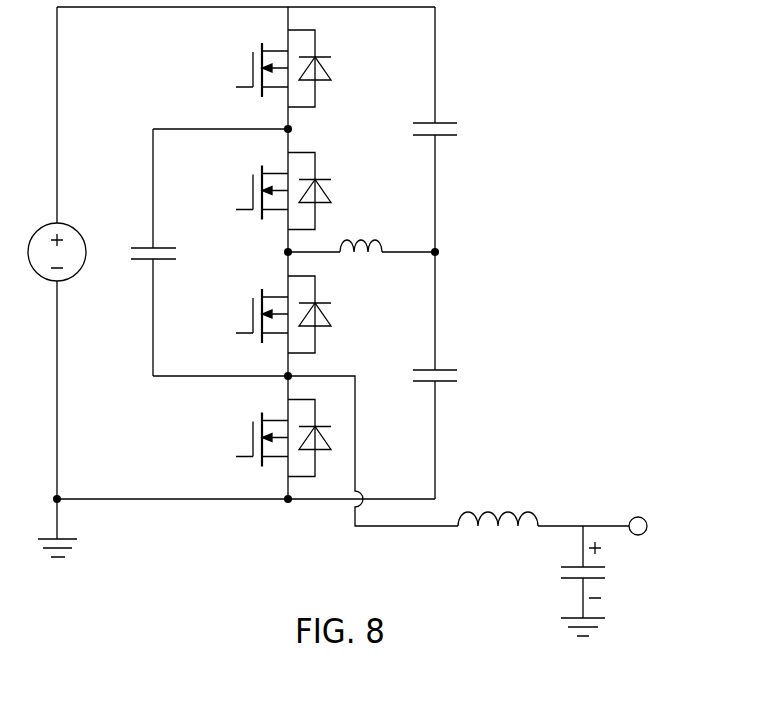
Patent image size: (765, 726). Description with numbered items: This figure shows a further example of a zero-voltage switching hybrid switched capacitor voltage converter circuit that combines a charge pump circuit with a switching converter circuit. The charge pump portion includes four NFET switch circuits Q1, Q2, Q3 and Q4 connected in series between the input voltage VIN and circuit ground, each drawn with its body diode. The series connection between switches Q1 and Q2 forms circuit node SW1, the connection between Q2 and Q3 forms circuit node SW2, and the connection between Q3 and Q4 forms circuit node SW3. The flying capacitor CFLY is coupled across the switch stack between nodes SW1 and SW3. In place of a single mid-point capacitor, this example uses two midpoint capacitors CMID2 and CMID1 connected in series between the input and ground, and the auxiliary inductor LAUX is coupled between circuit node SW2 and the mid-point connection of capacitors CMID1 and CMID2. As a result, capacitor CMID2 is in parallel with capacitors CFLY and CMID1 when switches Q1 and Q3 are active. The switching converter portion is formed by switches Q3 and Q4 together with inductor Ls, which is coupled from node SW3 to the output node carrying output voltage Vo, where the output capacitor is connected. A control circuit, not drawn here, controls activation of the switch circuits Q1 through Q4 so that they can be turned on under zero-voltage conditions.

The input voltage VIN is at (55, 232).
The flying capacitor CFLY is at (141, 231).
The first switch circuit Q1 is at (277, 68).
The second switch circuit Q2 is at (277, 191).
The third switch circuit Q3 is at (277, 314).
The fourth switch circuit Q4 is at (277, 438).
The circuit node SW1 is at (314, 134).
The circuit node SW2 is at (261, 256).
The circuit node SW3 is at (354, 364).
The auxiliary inductor LAUX is at (362, 227).
The midpoint capacitor CMID2 is at (454, 106).
The midpoint capacitor CMID1 is at (454, 353).
The inductor LS Ls is at (498, 504).
The output voltage Vo is at (599, 581).